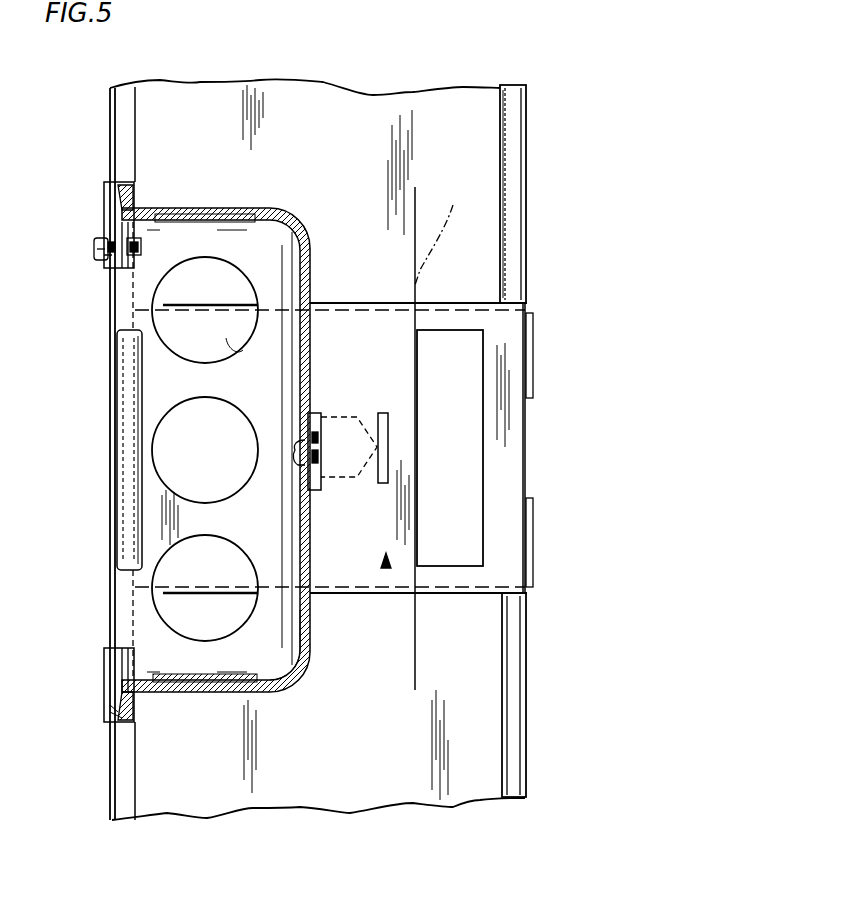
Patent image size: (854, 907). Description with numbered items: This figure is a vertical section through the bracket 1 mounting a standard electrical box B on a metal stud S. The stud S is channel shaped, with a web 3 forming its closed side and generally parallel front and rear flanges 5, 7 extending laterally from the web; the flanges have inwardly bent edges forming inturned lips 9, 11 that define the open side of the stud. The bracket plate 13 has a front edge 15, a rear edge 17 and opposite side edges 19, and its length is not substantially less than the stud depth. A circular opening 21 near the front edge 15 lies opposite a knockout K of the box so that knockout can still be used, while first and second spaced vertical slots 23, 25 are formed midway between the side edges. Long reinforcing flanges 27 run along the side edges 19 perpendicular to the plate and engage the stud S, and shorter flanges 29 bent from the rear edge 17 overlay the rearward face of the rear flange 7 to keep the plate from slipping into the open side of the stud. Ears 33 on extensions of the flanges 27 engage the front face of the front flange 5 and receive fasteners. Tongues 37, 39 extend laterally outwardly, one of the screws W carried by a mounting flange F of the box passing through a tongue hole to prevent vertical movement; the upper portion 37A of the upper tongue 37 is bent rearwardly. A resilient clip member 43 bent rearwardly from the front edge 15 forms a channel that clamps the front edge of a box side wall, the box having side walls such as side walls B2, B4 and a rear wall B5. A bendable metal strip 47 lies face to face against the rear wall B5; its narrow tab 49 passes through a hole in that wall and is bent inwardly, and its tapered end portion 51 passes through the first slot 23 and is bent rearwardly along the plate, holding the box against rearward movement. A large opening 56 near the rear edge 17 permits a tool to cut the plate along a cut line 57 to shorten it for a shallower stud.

The bracket 1 is at (562, 291).
The web 3 is at (313, 118).
The front flange 5 is at (110, 133).
The rear flange 7 is at (527, 113).
The inturned lip 9 is at (122, 145).
The inturned lip 11 is at (510, 135).
The bracket plate 13 is at (387, 567).
The front edge 15 is at (118, 413).
The rear edge 17 is at (533, 385).
The side edges 19 is at (373, 300).
The circular opening 21 is at (213, 440).
The first vertical slot 23 is at (315, 417).
The second vertical slot 25 is at (383, 413).
The reinforcing flanges 27 is at (463, 300).
The flanges 29 is at (527, 365).
The ears 33 is at (105, 200).
The upper tongue 37 is at (110, 217).
The upper portion of upper tongue 37A is at (120, 200).
The lower tongue 39 is at (110, 707).
The clip member 43 is at (132, 490).
The bendable flat metal strip 47 is at (324, 484).
The tab 49 is at (297, 462).
The tapered end portion 51 is at (368, 417).
The opening 56 is at (453, 500).
The cut line 57 is at (450, 232).
The electrical box B is at (300, 217).
The side wall B2 is at (267, 208).
The side wall B4 is at (273, 692).
The rear wall B5 is at (310, 648).
The mounting flange F is at (130, 233).
The knockouts K is at (207, 208).
The stud S is at (413, 93).
The screws W is at (107, 257).